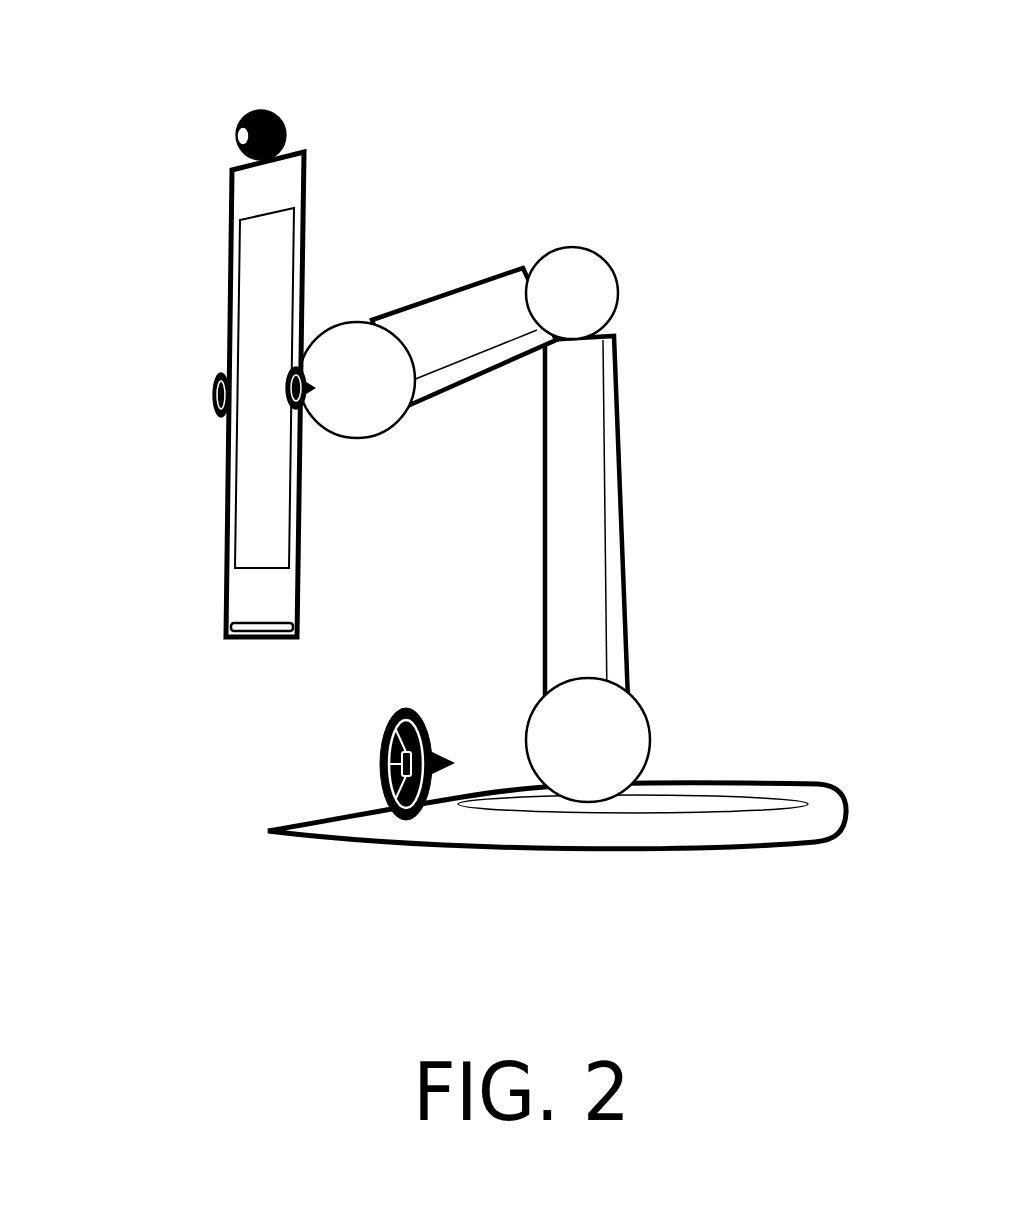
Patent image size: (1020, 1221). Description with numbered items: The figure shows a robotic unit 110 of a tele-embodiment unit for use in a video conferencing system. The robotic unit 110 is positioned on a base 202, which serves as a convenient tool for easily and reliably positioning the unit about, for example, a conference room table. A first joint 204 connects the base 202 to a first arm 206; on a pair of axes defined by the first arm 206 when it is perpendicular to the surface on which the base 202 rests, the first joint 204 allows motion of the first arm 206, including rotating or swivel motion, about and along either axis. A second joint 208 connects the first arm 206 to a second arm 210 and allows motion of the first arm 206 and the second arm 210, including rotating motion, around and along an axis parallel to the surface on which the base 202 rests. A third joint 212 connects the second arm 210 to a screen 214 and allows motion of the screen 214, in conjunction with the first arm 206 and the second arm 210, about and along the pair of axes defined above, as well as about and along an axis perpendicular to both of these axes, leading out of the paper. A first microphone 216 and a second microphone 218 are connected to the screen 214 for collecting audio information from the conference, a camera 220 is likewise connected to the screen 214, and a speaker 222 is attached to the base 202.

The robotic unit 110 is at (848, 26).
The base 202 is at (557, 828).
The first joint 204 is at (610, 736).
The first arm 206 is at (588, 508).
The second joint 208 is at (600, 293).
The second arm 210 is at (435, 325).
The third joint 212 is at (357, 410).
The screen 214 is at (226, 591).
The first microphone 216 is at (205, 402).
The second microphone 218 is at (273, 402).
The camera 220 is at (265, 97).
The speaker 222 is at (372, 770).